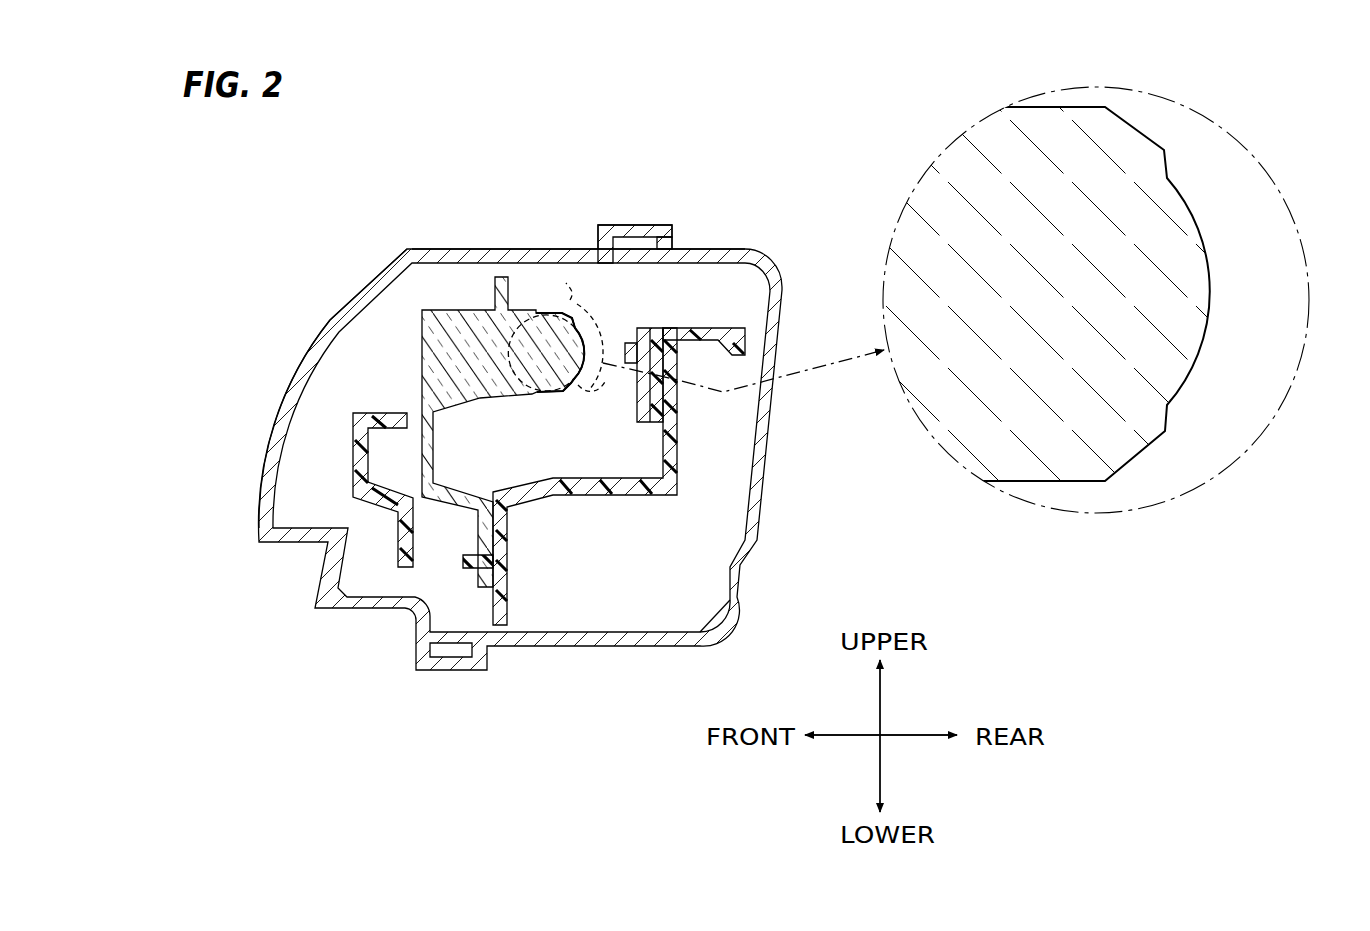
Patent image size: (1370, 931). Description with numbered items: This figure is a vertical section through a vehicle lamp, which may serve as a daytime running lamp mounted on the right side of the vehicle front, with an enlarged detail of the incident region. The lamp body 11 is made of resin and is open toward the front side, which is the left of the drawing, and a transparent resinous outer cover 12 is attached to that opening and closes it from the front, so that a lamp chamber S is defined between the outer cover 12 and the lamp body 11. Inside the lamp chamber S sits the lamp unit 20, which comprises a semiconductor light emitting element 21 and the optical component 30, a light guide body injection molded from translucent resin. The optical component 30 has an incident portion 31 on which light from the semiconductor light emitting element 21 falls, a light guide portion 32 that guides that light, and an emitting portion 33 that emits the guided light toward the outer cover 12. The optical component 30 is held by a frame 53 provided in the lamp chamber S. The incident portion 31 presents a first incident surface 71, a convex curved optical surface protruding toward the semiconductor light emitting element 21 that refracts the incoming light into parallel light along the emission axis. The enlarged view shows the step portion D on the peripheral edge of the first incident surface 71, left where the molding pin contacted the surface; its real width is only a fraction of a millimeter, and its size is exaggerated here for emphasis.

The lamp body 11 is at (778, 263).
The outer cover 12 is at (432, 249).
The lamp unit 20 is at (393, 348).
The semiconductor light emitting element 21 is at (625, 343).
The optical component 30 is at (549, 290).
The incident portion 31 is at (574, 309).
The light guide portion 32 is at (490, 320).
The emitting portion 33 is at (404, 322).
The frame 53 is at (678, 472).
The first incident surface 71 is at (590, 367).
The step portion D is at (587, 319).
The lamp chamber S is at (690, 598).